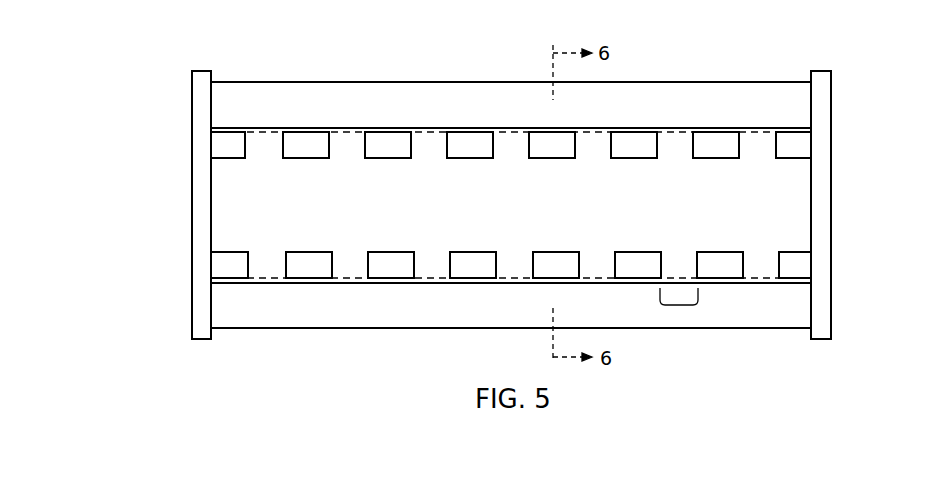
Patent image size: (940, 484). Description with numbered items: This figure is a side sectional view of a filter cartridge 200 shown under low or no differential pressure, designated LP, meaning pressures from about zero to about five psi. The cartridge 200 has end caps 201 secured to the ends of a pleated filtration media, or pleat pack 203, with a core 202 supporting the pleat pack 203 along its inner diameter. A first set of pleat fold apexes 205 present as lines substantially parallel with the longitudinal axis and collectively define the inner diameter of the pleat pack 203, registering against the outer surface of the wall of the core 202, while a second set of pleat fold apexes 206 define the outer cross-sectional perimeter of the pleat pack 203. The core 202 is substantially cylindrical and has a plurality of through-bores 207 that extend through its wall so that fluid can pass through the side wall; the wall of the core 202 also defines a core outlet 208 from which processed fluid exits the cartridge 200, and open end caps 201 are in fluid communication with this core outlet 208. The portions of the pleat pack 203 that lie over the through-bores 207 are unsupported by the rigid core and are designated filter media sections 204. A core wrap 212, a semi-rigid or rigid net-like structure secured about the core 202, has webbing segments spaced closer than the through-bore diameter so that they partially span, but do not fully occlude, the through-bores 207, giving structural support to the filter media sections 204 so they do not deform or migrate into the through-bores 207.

The filter cartridge 200 is at (511, 193).
The end caps 201 is at (192, 145).
The core 202 is at (225, 147).
The pleat pack 203 is at (529, 76).
The filter media sections 204 is at (679, 305).
The first set of pleat fold apexes 205 is at (292, 129).
The second set of pleat fold apexes 206 is at (717, 82).
The through-bores 207 is at (421, 147).
The core outlet 208 is at (649, 210).
The core wrap 212 is at (340, 278).
The low differential pressure LP is at (436, 65).